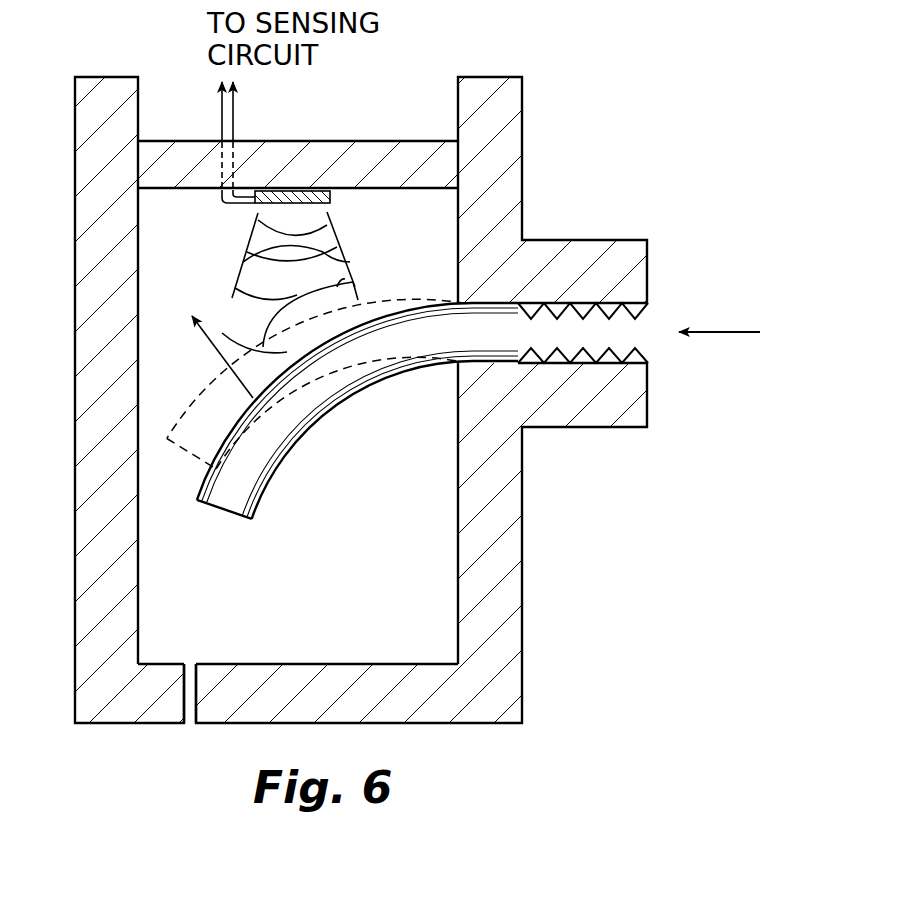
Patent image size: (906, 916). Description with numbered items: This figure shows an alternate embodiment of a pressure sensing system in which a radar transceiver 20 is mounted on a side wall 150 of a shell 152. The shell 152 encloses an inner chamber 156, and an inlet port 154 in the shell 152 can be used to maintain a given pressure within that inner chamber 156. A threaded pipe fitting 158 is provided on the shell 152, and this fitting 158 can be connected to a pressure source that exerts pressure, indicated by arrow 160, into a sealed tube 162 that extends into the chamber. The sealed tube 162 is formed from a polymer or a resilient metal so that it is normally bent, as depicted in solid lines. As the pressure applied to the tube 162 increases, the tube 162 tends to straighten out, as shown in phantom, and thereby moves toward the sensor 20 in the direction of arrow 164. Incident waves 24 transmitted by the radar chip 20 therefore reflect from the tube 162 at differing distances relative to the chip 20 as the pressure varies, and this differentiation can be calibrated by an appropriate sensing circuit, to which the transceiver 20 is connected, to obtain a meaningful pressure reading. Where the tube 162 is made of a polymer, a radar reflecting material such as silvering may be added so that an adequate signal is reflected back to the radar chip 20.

The radar transceiver 20 is at (306, 190).
The incident waves 24 is at (340, 262).
The side wall 150 is at (375, 163).
The shell 152 is at (523, 597).
The inlet port 154 is at (190, 665).
The inner chamber 156 is at (352, 573).
The threaded pipe fitting 158 is at (624, 342).
The pressure 160 is at (735, 332).
The sealed tube 162 is at (307, 427).
The tube movement 164 is at (219, 352).